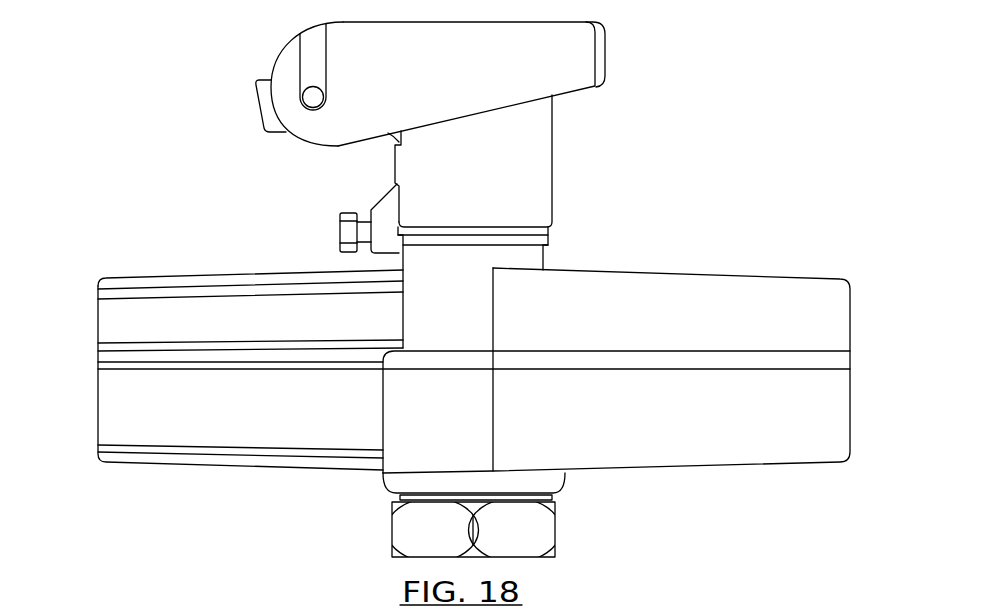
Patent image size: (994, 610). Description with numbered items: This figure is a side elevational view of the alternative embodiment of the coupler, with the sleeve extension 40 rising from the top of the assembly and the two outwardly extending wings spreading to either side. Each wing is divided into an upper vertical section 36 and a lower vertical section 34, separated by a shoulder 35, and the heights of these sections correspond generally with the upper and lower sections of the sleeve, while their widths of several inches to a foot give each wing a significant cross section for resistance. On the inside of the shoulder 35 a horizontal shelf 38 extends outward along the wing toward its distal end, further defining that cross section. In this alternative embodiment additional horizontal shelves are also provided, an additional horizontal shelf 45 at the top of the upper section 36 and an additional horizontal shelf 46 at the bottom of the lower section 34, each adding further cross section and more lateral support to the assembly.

The lower vertical section 34 is at (128, 402).
The shoulder 35 is at (837, 360).
The upper vertical section 36 is at (123, 320).
The shelf 38 is at (213, 355).
The sleeve extension 40 is at (530, 155).
The additional horizontal shelf 45 is at (193, 283).
The additional horizontal shelf 46 is at (222, 458).